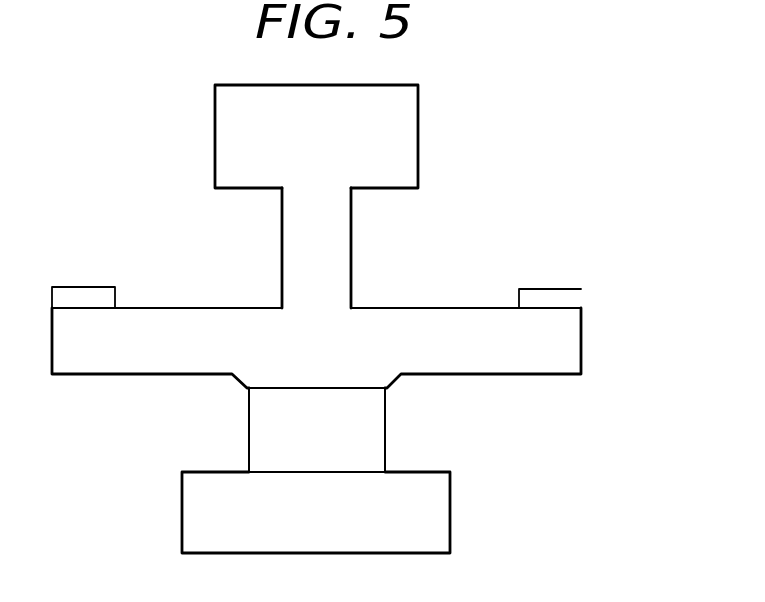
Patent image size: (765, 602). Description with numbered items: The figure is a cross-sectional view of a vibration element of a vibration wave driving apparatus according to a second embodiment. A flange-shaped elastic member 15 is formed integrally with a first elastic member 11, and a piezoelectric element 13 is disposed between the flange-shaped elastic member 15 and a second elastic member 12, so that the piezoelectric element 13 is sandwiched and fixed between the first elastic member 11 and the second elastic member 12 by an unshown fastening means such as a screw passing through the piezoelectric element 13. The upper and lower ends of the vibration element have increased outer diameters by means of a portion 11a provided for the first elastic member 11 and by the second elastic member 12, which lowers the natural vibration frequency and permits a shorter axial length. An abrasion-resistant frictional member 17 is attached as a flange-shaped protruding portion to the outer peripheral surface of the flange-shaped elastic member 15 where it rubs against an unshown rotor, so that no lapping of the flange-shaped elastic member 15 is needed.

The portion 11a is at (407, 138).
The first elastic member 11 is at (335, 248).
The second elastic member 12 is at (437, 516).
The piezoelectric element 13 is at (370, 431).
The flange-shaped elastic member 15 is at (572, 345).
The frictional member 17 is at (572, 298).